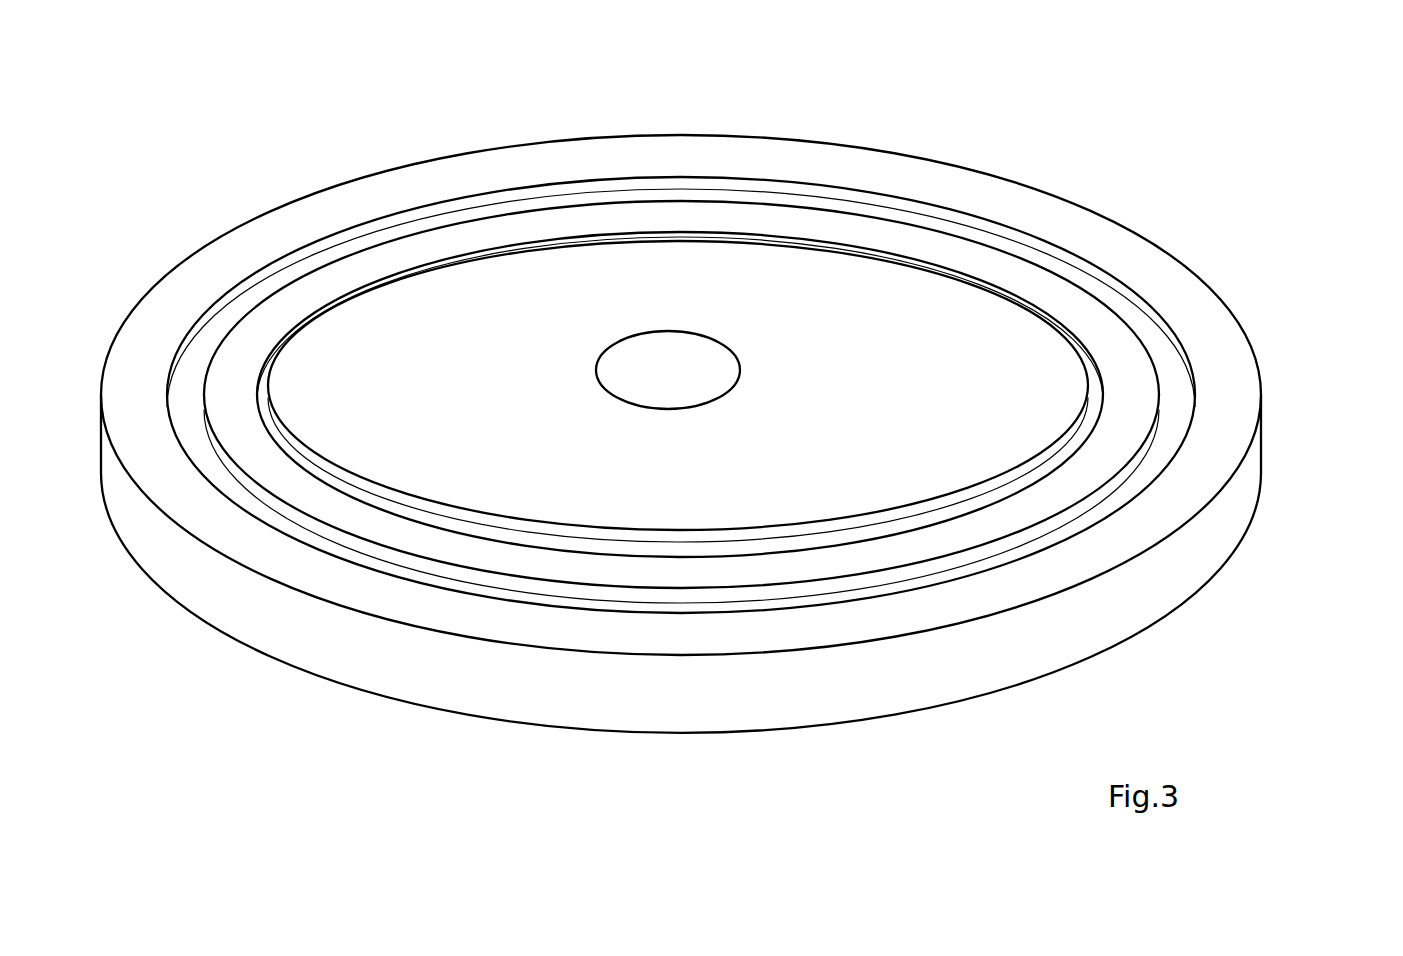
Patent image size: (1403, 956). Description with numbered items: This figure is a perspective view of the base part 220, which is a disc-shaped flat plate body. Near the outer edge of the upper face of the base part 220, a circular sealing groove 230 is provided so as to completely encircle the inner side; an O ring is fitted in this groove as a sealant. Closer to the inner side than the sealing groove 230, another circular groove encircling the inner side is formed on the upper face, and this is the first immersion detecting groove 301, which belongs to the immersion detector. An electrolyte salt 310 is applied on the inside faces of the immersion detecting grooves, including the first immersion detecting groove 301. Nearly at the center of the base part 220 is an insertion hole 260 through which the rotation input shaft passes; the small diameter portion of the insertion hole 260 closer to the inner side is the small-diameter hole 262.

The base part 220 is at (1311, 237).
The sealing groove 230 is at (198, 330).
The electrolyte salt 310 is at (295, 333).
The first immersion detecting groove 301 is at (330, 313).
The small-diameter hole 262 is at (620, 356).
The insertion hole 260 is at (722, 316).